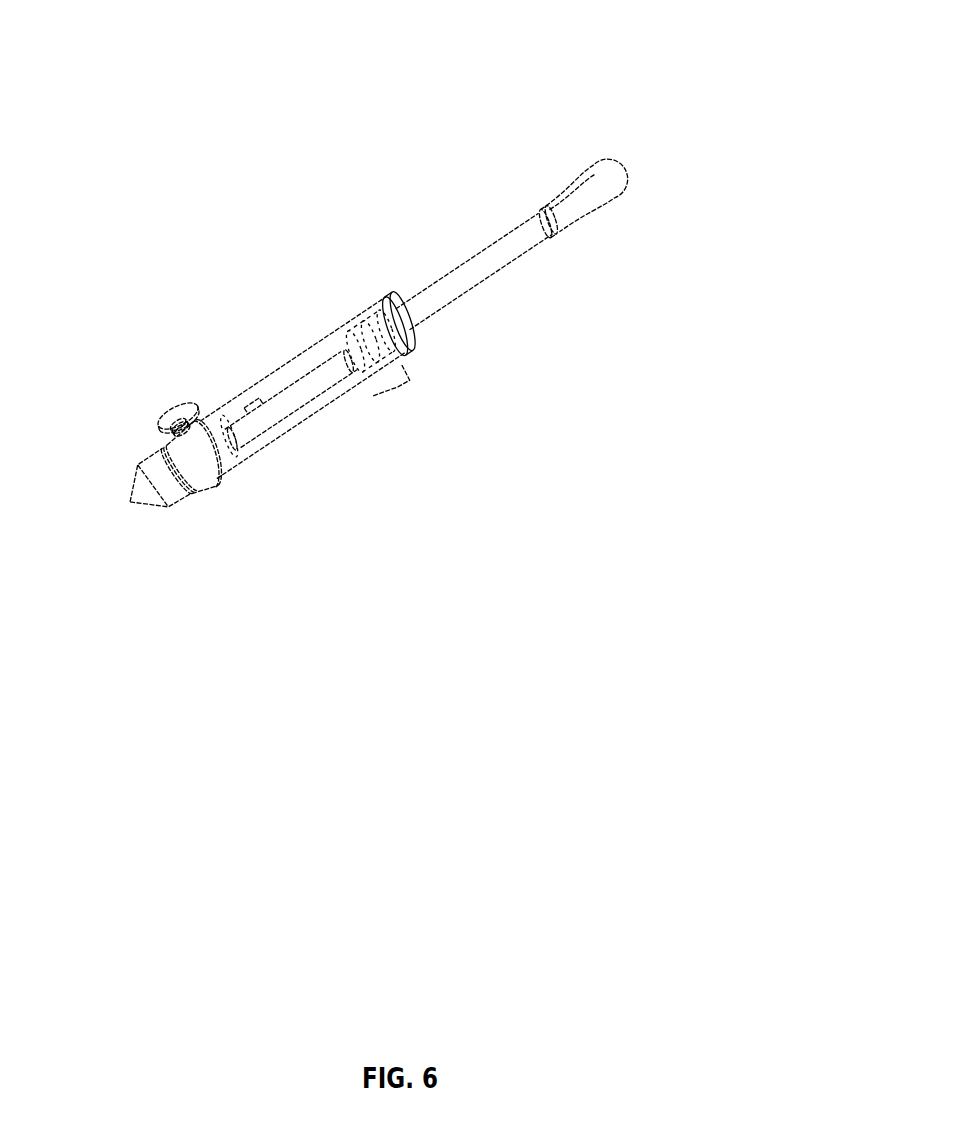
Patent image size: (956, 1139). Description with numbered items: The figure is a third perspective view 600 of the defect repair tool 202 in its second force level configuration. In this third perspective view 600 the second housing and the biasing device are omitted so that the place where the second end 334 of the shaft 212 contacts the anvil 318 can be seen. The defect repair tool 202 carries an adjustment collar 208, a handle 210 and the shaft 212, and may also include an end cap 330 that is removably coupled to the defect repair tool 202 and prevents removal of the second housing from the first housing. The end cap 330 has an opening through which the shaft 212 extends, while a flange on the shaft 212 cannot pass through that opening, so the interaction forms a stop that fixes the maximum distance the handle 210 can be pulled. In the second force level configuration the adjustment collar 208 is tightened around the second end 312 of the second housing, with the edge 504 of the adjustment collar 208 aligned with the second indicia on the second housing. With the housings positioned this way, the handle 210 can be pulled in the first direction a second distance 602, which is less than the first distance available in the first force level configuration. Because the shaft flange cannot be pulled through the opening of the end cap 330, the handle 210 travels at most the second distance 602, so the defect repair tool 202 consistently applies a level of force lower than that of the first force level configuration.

The third perspective view 600 is at (501, 84).
The defect repair tool 202 is at (325, 255).
The second end of shaft 334 is at (254, 398).
The anvil 318 is at (221, 428).
The end cap 330 is at (418, 335).
The handle 210 is at (575, 210).
The second distance 602 is at (402, 398).
The shaft 212 is at (305, 387).
The edge of adjustment collar 504 is at (162, 444).
The adjustment collar 208 is at (220, 482).
The second end of second housing 312 is at (201, 499).